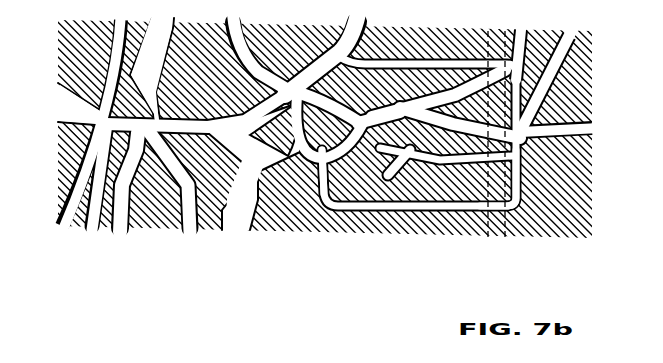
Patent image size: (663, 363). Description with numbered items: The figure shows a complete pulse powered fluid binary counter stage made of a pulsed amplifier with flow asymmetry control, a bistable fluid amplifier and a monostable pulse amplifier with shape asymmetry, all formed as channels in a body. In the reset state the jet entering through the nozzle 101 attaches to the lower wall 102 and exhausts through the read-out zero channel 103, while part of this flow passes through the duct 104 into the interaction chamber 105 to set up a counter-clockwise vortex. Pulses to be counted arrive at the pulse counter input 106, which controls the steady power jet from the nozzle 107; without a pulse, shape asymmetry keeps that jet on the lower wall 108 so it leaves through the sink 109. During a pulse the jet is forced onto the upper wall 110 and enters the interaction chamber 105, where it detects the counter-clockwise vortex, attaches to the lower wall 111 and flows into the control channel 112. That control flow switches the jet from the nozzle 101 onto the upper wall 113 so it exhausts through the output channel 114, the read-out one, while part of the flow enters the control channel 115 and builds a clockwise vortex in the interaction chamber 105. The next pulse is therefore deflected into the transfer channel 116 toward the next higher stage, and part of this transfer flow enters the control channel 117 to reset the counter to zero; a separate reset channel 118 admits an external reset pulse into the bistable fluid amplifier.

The nozzle 101 is at (560, 122).
The lower wall 102 is at (458, 130).
The read-out "zero" channel 103 is at (403, 163).
The duct 104 is at (408, 170).
The interaction chamber 105 is at (244, 137).
The pulse counter input 106 is at (62, 224).
The nozzle 107 is at (95, 116).
The lower wall 108 is at (127, 140).
The sink 109 is at (188, 222).
The upper wall 110 is at (144, 20).
The lower wall 111 is at (253, 157).
The control channel 112 is at (518, 214).
The upper wall 113 is at (518, 34).
The output channel 114 is at (383, 88).
The control channel 115 is at (325, 208).
The transfer channel 116 is at (362, 30).
The control channel 117 is at (442, 60).
The reset channel 118 is at (568, 38).